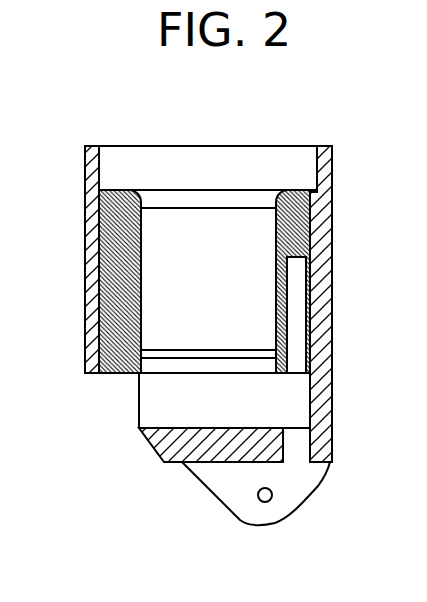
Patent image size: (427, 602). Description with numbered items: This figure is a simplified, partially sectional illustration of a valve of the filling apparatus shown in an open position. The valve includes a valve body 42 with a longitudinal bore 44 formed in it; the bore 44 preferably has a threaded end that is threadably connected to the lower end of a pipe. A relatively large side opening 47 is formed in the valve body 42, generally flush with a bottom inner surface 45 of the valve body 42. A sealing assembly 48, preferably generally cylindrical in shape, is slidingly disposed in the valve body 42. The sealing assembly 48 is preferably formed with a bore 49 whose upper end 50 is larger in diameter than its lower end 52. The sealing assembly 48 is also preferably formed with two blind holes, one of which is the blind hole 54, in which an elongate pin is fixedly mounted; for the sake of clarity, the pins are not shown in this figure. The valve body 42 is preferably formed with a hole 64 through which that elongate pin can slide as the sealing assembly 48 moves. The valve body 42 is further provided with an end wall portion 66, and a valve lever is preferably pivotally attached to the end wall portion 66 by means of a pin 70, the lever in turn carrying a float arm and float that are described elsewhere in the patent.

The valve body 42 is at (325, 211).
The longitudinal bore 44 is at (142, 160).
The bottom inner surface 45 is at (188, 428).
The side opening 47 is at (138, 412).
The sealing assembly 48 is at (274, 232).
The bore 49 is at (160, 270).
The upper end 50 is at (203, 200).
The lower end 52 is at (200, 367).
The blind hole 54 is at (297, 356).
The hole 64 is at (296, 458).
The end wall portion 66 is at (222, 480).
The pin 70 is at (259, 502).